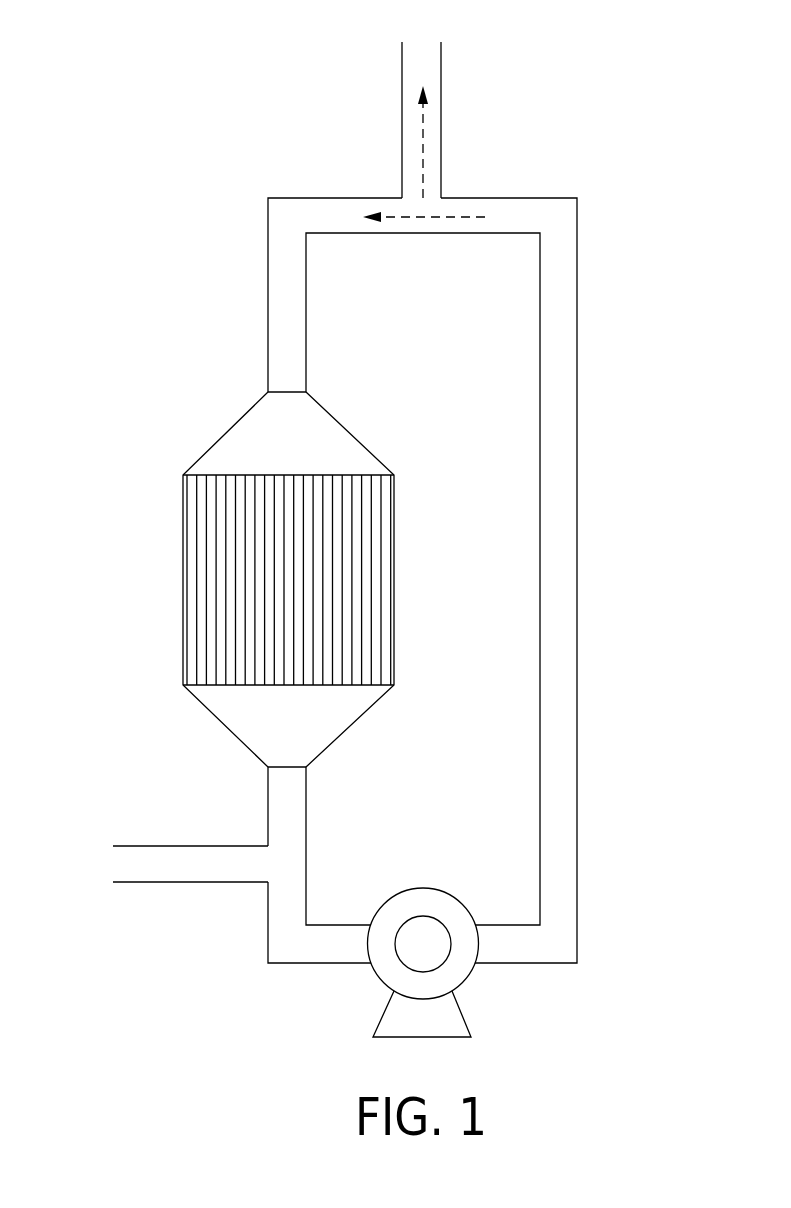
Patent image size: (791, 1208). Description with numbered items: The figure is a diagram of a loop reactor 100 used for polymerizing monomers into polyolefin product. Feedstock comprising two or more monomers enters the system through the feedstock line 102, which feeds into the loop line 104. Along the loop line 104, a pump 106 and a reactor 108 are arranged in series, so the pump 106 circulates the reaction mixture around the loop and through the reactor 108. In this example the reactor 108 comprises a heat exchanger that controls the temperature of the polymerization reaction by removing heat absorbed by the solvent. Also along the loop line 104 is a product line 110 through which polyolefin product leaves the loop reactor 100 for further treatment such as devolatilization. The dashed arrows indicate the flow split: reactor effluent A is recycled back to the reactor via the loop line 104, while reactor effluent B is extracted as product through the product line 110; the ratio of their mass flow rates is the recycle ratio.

The loop reactor 100 is at (152, 95).
The feedstock line 102 is at (160, 882).
The loop line 104 is at (577, 335).
The pump 106 is at (462, 1012).
The reactor 108 is at (349, 432).
The product line 110 is at (402, 119).
The reactor effluent recycled back to the reactor A is at (421, 215).
The reactor effluent extracted as polyolefin product B is at (425, 135).